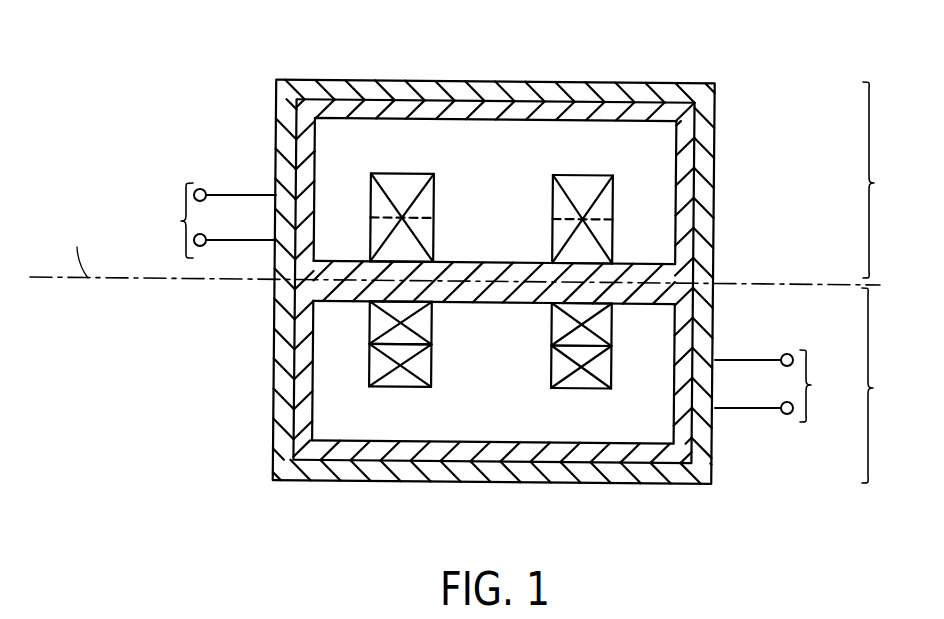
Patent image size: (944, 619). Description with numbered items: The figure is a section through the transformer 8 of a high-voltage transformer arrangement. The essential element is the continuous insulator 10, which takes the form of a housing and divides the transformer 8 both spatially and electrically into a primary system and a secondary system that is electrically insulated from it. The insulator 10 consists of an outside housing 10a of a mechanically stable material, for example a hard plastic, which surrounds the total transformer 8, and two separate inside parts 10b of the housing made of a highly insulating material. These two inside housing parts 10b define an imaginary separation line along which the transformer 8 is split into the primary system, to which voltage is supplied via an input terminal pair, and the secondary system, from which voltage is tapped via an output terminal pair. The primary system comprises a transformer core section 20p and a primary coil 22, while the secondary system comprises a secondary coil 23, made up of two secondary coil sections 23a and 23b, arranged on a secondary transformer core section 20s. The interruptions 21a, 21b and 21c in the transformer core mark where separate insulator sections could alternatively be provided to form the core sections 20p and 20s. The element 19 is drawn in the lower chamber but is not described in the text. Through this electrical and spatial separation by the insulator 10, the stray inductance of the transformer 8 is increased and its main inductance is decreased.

The transformer 8 is at (788, 116).
The insulator 10 is at (537, 72).
The outside housing 10a is at (622, 95).
The inside parts of the housing 10b is at (655, 110).
The bottom wall of secondary chamber 19 is at (345, 440).
The transformer core section 20p is at (510, 167).
The secondary transformer core section 20s is at (510, 420).
The interruption 21a is at (343, 260).
The interruption 21b is at (491, 262).
The interruption 21c is at (660, 262).
The primary coil 22 is at (607, 200).
The secondary coil 23 is at (222, 322).
The secondary coil section 23a is at (380, 323).
The secondary coil section 23b is at (380, 365).